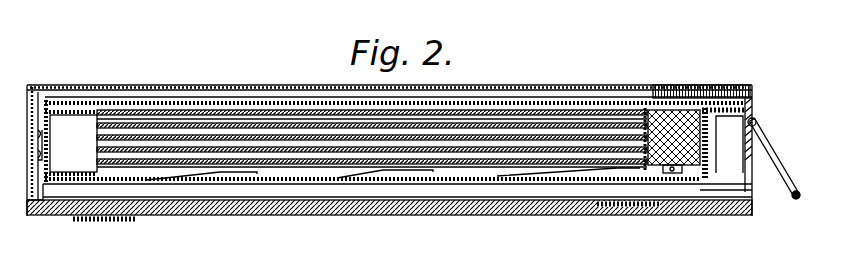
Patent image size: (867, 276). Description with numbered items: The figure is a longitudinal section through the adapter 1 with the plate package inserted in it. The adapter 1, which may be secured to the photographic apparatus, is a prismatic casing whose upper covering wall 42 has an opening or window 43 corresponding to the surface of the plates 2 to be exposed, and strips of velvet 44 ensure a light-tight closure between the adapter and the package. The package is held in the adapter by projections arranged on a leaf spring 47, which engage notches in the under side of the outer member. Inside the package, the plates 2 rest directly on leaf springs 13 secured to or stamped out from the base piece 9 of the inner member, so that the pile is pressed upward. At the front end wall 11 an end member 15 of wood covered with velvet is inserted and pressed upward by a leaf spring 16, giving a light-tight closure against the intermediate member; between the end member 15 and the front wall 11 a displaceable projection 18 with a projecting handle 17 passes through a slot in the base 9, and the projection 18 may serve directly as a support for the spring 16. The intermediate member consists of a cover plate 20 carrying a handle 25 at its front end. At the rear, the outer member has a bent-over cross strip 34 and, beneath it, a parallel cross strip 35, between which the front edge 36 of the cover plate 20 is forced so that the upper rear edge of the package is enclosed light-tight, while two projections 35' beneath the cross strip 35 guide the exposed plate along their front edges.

The adapter 1 is at (477, 218).
The plates 2 is at (475, 112).
The base piece 9 is at (318, 182).
The front end wall 11 is at (748, 103).
The leaf springs 13 is at (212, 180).
The end member 15 is at (697, 98).
The leaf spring 16 is at (641, 206).
The handle 17 is at (753, 186).
The projection 18 is at (710, 190).
The cover plate 20 is at (549, 108).
The handle 25 is at (770, 150).
The cross strip 34 is at (62, 100).
The cross strip 35 is at (395, 79).
The projections 35' is at (128, 112).
The front edge 36 is at (33, 86).
The upper covering wall 42 is at (678, 86).
The strips of velvet 44 is at (600, 208).
The leaf spring 47 is at (122, 221).
The opening or window 43 is at (37, 218).